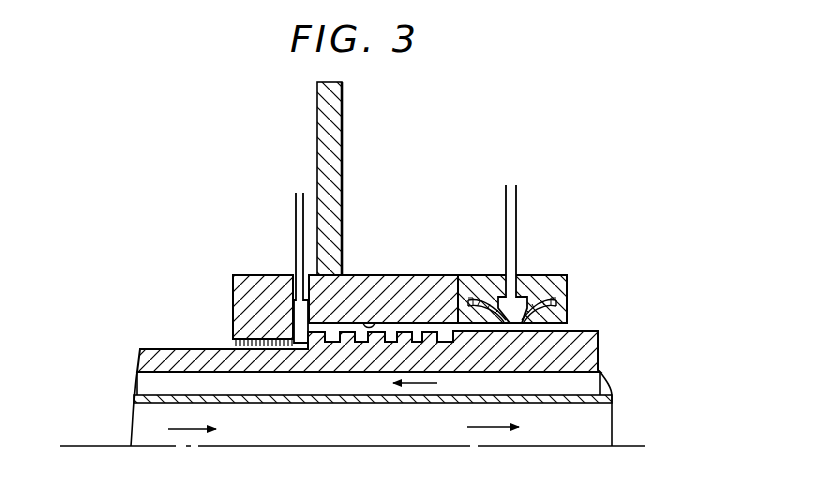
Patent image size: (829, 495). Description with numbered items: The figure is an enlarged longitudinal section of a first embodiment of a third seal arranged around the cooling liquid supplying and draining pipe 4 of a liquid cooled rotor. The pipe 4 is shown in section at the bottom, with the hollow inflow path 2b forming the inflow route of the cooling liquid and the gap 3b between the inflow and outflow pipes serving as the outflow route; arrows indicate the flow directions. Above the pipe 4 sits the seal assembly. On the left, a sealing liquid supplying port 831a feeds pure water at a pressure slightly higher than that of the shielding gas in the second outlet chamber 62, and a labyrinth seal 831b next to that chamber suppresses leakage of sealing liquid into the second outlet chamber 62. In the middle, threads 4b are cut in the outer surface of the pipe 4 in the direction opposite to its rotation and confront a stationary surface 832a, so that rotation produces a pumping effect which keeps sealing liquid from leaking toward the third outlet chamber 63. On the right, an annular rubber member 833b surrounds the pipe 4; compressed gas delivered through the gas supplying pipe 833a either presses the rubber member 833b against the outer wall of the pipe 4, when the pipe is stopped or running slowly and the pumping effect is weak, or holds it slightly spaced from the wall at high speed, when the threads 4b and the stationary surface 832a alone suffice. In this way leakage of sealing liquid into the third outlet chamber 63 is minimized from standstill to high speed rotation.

The second outlet chamber 62 is at (236, 236).
The third outlet chamber 63 is at (495, 227).
The sealing liquid supplying port 831a is at (297, 193).
The labyrinth seal 831b is at (231, 341).
The stationary surface 832a is at (369, 320).
The gas supplying pipe 833a is at (510, 185).
The annular rubber member 833b is at (523, 303).
The threads 4b is at (405, 333).
The inflow path 2b is at (260, 403).
The gap 3b is at (322, 388).
The supplying and draining pipe 4 is at (412, 436).